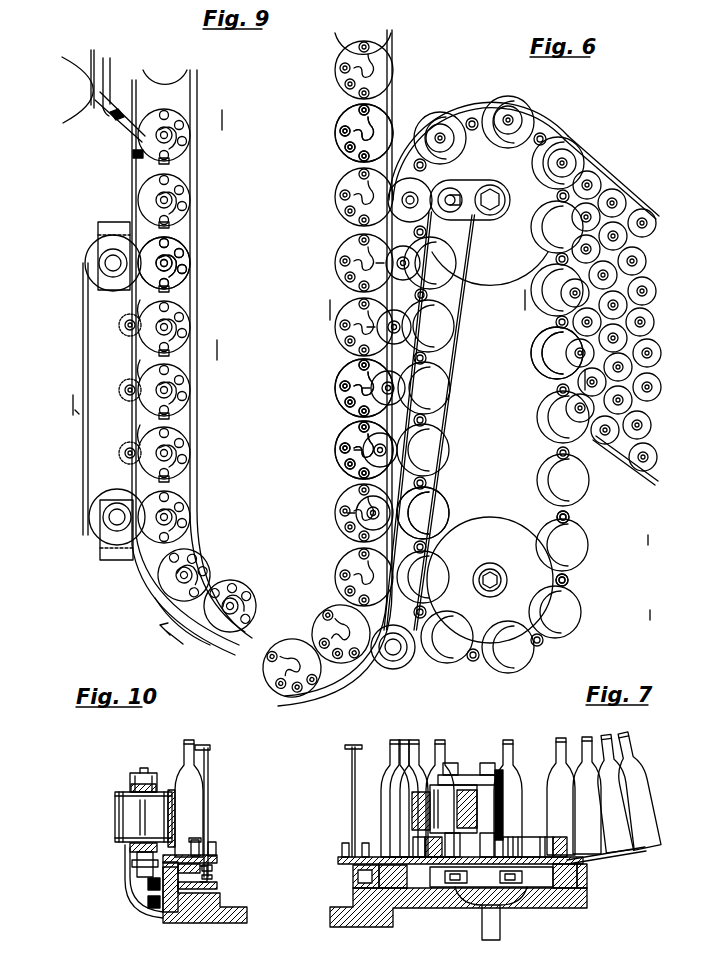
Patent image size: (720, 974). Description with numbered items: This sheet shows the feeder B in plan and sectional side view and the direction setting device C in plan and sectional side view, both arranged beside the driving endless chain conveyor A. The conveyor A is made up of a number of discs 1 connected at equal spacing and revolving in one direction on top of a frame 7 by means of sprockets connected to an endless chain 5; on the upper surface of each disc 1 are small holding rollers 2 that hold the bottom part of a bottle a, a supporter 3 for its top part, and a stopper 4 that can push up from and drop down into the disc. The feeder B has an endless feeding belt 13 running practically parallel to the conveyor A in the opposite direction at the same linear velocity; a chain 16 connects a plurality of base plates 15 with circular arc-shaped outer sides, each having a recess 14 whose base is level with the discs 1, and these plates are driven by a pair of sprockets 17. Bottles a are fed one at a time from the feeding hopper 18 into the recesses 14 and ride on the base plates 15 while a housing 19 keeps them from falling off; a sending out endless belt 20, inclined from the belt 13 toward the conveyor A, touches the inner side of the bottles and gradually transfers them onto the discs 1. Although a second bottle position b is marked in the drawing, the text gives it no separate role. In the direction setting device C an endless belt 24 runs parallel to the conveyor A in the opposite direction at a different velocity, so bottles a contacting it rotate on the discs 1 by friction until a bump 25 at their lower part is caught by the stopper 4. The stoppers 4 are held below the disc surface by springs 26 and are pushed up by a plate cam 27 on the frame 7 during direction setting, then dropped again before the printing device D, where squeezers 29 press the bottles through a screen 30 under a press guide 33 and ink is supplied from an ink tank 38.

In FIG. 9, the disc 1 is at (222, 590).
In FIG. 6, the disc 1 is at (378, 125).
In FIG. 10, the disc 1 is at (218, 862).
In FIG. 7, the disc 1 is at (338, 858).
In FIG. 9, the small holding roller 2 is at (190, 553).
In FIG. 6, the small holding roller 2 is at (352, 368).
In FIG. 10, the small holding roller 2 is at (200, 843).
In FIG. 7, the small holding roller 2 is at (343, 843).
In FIG. 9, the supporter 3 is at (178, 583).
In FIG. 6, the supporter 3 is at (345, 410).
In FIG. 7, the supporter 3 is at (348, 747).
In FIG. 9, the stopper 4 is at (187, 283).
In FIG. 10, the stopper 4 is at (214, 853).
In FIG. 7, the endless chain 5 is at (362, 877).
In FIG. 9, the frame 7 is at (198, 508).
In FIG. 10, the frame 7 is at (200, 916).
In FIG. 7, the frame 7 is at (437, 909).
In FIG. 6, the endless feeding belt 13 is at (571, 581).
In FIG. 6, the recess 14 is at (560, 365).
In FIG. 7, the recess 14 is at (417, 847).
In FIG. 6, the base plate 15 is at (550, 351).
In FIG. 7, the base plate 15 is at (400, 857).
In FIG. 6, the chain 16 is at (571, 516).
In FIG. 7, the chain 16 is at (563, 892).
In FIG. 6, the sprocket 17 is at (492, 272).
In FIG. 6, the feeding hopper 18 is at (637, 203).
In FIG. 7, the feeding hopper 18 is at (640, 852).
In FIG. 6, the housing 19 is at (552, 114).
In FIG. 6, the sending out endless belt 20 is at (460, 328).
In FIG. 7, the sending out endless belt 20 is at (413, 800).
In FIG. 9, the endless belt 24 is at (84, 452).
In FIG. 10, the endless belt 24 is at (178, 812).
In FIG. 9, the bump 25 is at (178, 272).
In FIG. 10, the bump 25 is at (181, 853).
In FIG. 10, the spring 26 is at (212, 872).
In FIG. 9, the plate cam 27 is at (189, 160).
In FIG. 10, the plate cam 27 is at (216, 889).
In FIG. 9, the squeezer 29 is at (124, 118).
In FIG. 9, the screen 30 is at (132, 153).
In FIG. 9, the press guide 33 is at (108, 60).
In FIG. 9, the ink tank 38 is at (92, 48).
In FIG. 9, the bottle a is at (163, 262).
In FIG. 6, the bottle a is at (355, 463).
In FIG. 10, the bottle a is at (193, 783).
In FIG. 7, the bottle a is at (397, 770).
In FIG. 6, the bottle b is at (335, 523).
In FIG. 9, the driving endless chain conveyor A is at (176, 385).
In FIG. 6, the driving endless chain conveyor A is at (370, 290).
In FIG. 10, the driving endless chain conveyor A is at (153, 883).
In FIG. 7, the driving endless chain conveyor A is at (357, 870).
In FIG. 6, the feeder B is at (503, 413).
In FIG. 7, the feeder B is at (503, 730).
In FIG. 9, the direction setting device C is at (113, 299).
In FIG. 10, the direction setting device C is at (145, 828).
In FIG. 9, the printing device D is at (126, 84).